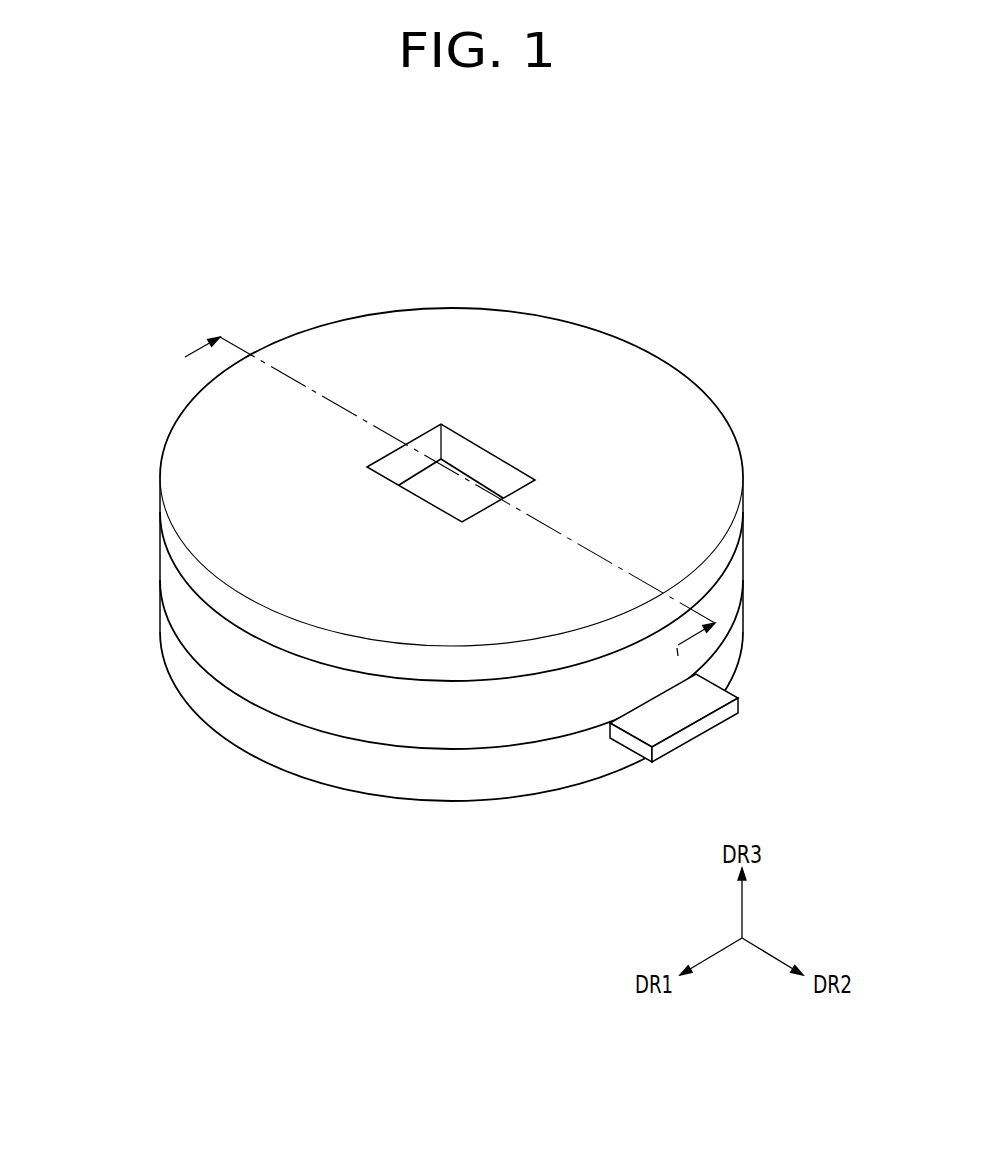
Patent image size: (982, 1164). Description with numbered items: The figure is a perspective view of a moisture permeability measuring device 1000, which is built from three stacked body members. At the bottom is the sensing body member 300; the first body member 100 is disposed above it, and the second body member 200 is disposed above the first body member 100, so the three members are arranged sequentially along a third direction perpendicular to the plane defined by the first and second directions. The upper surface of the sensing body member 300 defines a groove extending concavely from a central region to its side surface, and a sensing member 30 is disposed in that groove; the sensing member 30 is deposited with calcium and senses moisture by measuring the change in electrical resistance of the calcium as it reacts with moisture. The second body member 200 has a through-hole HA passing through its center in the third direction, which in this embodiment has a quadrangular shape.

The moisture permeability measuring device 1000 is at (692, 330).
The second body member 200 is at (165, 528).
The first body member 100 is at (168, 579).
The sensing body member 300 is at (168, 642).
The sensing member 30 is at (703, 725).
The through-hole HA is at (476, 465).